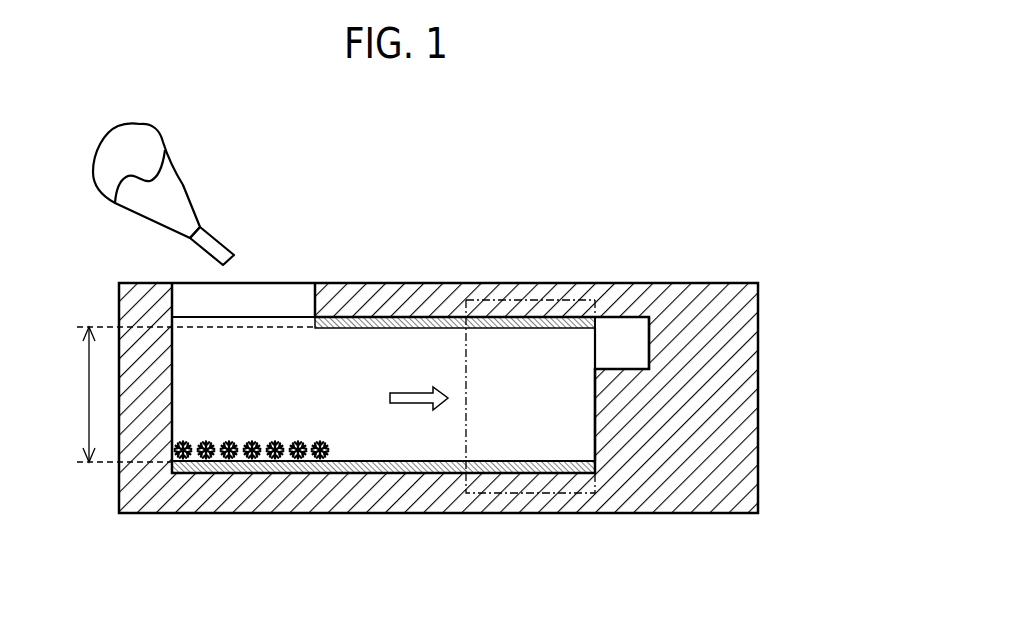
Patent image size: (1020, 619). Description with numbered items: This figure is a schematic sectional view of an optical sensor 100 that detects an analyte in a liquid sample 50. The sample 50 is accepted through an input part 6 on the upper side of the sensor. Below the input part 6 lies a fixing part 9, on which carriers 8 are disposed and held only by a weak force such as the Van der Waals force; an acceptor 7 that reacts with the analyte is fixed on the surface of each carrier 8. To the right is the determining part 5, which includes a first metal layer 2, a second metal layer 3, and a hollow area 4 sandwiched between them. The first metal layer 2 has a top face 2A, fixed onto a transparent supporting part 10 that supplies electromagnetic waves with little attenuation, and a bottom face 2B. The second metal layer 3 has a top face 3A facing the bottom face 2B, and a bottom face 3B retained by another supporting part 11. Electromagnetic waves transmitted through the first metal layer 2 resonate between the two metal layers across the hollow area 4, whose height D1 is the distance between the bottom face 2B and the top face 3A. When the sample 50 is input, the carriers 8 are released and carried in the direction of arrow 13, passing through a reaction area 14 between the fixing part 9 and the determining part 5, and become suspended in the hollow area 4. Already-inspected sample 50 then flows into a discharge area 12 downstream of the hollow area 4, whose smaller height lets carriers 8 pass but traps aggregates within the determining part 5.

The optical sensor 100 is at (768, 228).
The sample 50 is at (183, 180).
The input part 6 is at (268, 300).
The first metal layer 2 is at (537, 322).
The top face 2A is at (582, 313).
The bottom face 2B is at (594, 331).
The discharge area 12 is at (622, 328).
The supporting part 10 is at (508, 285).
The supporting part 11 is at (478, 502).
The determining part 5 is at (466, 413).
The arrow 13 is at (413, 390).
The hollow area 4 is at (568, 417).
The reaction area 14 is at (375, 412).
The second metal layer 3 is at (535, 473).
The top face 3A is at (568, 459).
The bottom face 3B is at (565, 474).
The carrier 8 is at (172, 463).
The fixing part 9 is at (253, 474).
The acceptor 7 is at (187, 453).
The height of hollow area D1 is at (180, 394).